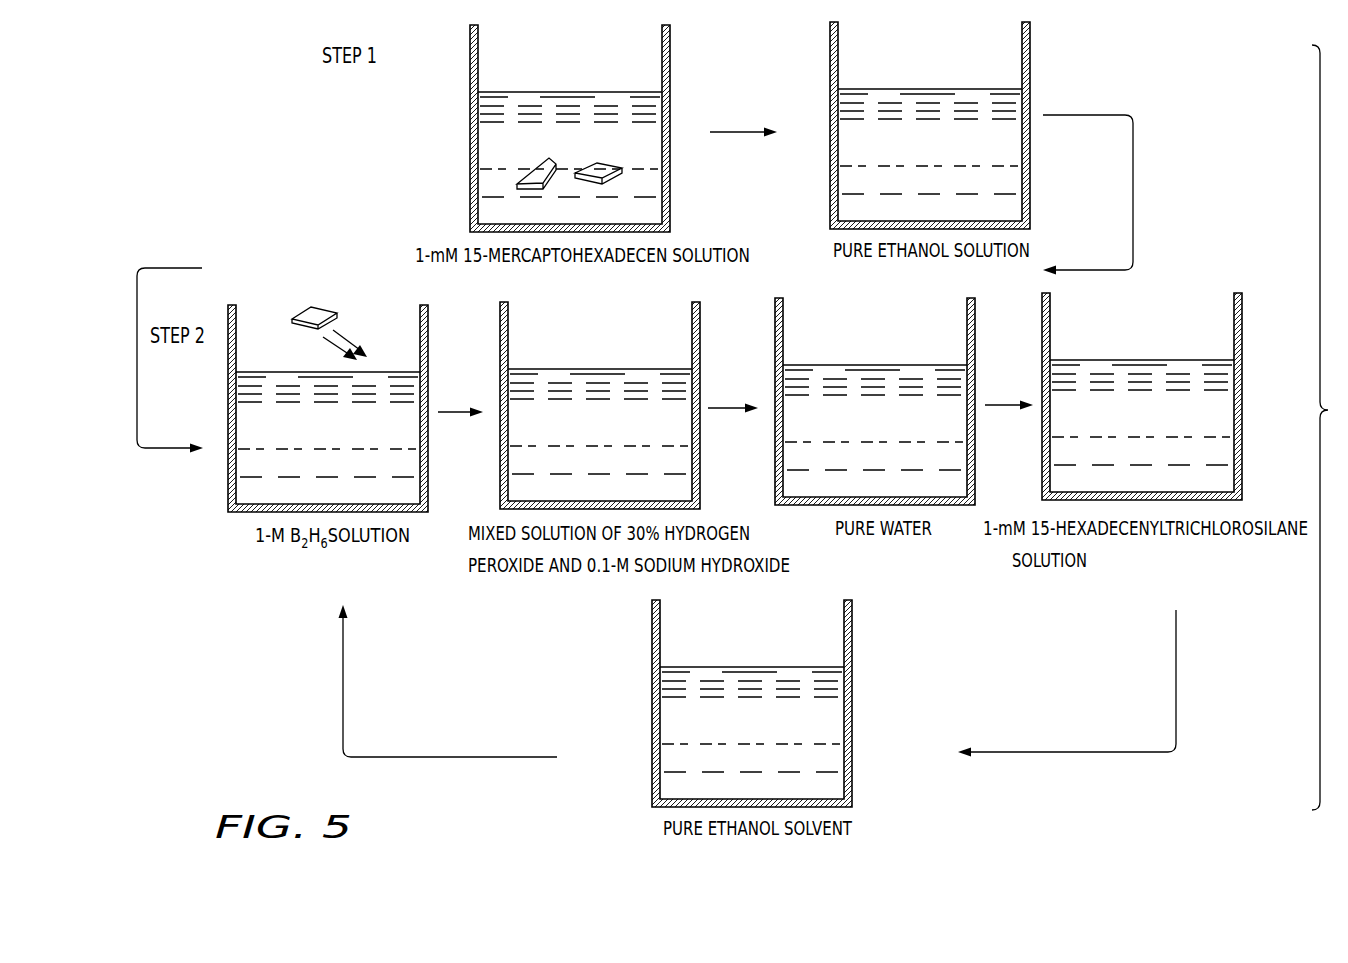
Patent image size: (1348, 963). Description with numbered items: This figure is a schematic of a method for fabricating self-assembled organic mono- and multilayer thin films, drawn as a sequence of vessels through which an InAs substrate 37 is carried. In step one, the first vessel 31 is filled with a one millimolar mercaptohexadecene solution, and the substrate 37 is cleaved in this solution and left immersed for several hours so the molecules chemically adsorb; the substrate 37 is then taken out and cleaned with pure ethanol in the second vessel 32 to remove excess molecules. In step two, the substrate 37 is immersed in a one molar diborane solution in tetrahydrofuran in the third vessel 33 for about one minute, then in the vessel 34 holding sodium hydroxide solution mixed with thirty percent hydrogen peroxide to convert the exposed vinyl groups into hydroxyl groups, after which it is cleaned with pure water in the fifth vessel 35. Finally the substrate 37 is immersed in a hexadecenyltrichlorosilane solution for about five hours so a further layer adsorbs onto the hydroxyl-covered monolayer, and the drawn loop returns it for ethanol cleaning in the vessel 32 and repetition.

The first vessel 31 is at (470, 100).
The second vessel 32 is at (1030, 62).
The third vessel 33 is at (430, 345).
The beaker containing mixed solution of hydrogen peroxide and sodium hydroxide 34 is at (700, 340).
The fifth vessel 35 is at (975, 338).
The InAs substrate 37 is at (600, 170).